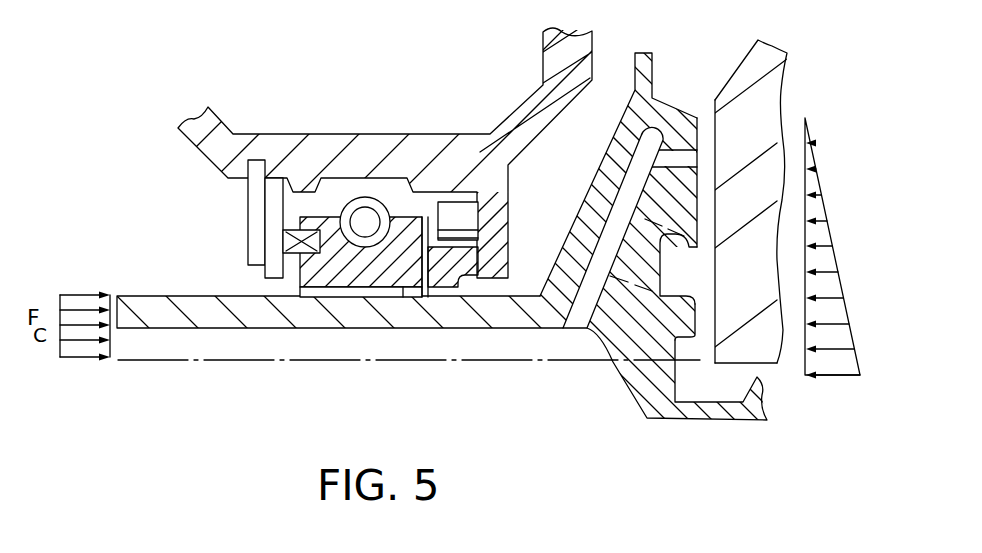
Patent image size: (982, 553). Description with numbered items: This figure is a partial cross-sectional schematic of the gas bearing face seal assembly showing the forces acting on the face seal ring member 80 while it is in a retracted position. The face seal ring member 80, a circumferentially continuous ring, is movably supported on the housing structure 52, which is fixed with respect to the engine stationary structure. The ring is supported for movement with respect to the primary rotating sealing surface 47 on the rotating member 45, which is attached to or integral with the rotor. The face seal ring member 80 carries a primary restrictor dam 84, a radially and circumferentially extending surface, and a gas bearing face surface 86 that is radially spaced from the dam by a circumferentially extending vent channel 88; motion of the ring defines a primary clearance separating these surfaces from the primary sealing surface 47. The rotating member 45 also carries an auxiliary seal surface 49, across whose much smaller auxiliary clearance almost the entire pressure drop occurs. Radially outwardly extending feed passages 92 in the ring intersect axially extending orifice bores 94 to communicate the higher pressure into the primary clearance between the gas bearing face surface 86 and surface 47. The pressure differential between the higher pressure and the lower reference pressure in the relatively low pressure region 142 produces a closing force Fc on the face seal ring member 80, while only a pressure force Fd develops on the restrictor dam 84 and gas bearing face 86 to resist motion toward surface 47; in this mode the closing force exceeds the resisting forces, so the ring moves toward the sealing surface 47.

The housing structure 52 is at (222, 130).
The face seal ring member 80 is at (615, 394).
The feed passages 92 is at (576, 312).
The orifice bores 94 is at (673, 152).
The primary rotating sealing surface 47 is at (719, 146).
The rotating member 45 is at (745, 64).
The gas bearing face surface 86 is at (717, 200).
The vent channel 88 is at (677, 267).
The primary restrictor dam 84 is at (696, 307).
The auxiliary seal surface 49 is at (738, 366).
The relatively low pressure region 142 is at (806, 116).